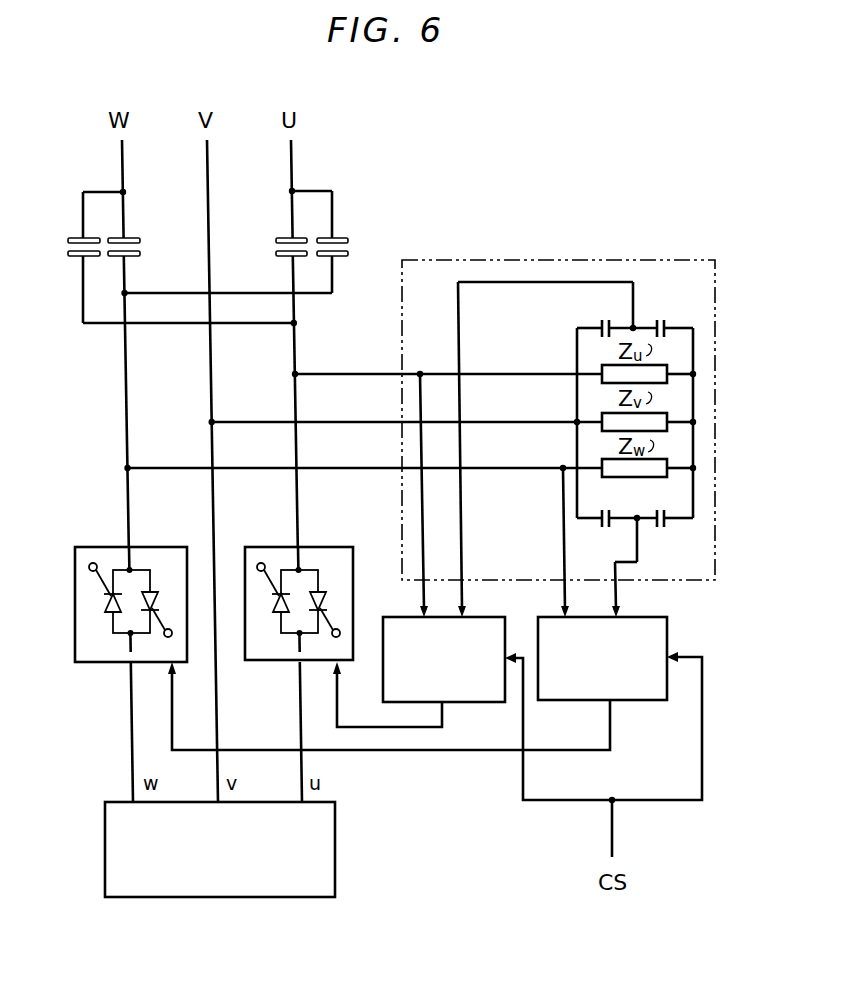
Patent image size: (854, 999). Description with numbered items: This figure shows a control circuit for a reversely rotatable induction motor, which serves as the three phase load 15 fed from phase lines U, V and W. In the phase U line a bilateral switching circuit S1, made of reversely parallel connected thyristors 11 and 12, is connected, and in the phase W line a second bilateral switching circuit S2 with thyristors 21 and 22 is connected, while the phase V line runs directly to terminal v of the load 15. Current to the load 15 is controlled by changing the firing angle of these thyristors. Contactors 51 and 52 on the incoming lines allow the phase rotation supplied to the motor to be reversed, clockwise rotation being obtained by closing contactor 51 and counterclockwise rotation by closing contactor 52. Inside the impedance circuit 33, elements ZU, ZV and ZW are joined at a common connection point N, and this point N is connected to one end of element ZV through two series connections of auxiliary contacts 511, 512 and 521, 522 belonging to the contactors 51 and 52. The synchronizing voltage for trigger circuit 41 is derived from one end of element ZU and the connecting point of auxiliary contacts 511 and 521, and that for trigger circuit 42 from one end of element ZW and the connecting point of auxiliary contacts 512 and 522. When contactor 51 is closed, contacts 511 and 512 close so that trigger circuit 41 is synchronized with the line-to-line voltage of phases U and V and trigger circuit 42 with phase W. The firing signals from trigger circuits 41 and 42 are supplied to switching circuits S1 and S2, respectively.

The contactor 51 is at (130, 238).
The contactor 52 is at (78, 238).
The impedance circuit 33 is at (478, 260).
The auxiliary contact 511 is at (601, 326).
The auxiliary contact 521 is at (656, 326).
The auxiliary contact 522 is at (602, 530).
The auxiliary contact 512 is at (668, 530).
The common connection point N is at (695, 424).
The bilateral switching circuit S1 is at (274, 547).
The bilateral switching circuit S2 is at (156, 547).
The thyristor 11 is at (326, 600).
The thyristor 12 is at (284, 612).
The thyristor 21 is at (158, 600).
The thyristor 22 is at (116, 612).
The trigger circuit 41 is at (406, 617).
The trigger circuit 42 is at (668, 650).
The three phase load 15 is at (335, 858).